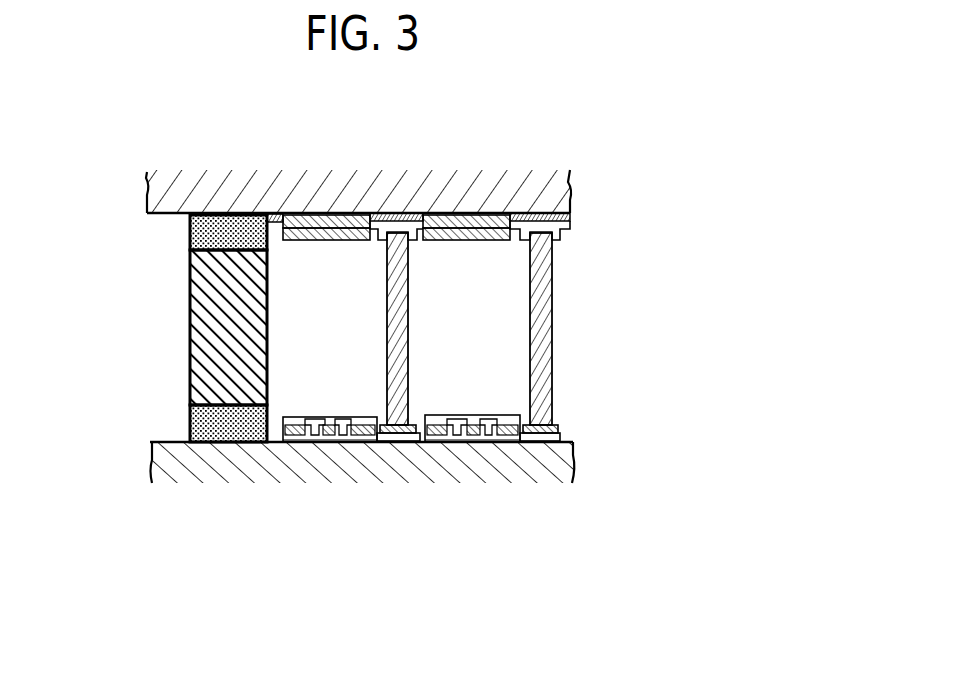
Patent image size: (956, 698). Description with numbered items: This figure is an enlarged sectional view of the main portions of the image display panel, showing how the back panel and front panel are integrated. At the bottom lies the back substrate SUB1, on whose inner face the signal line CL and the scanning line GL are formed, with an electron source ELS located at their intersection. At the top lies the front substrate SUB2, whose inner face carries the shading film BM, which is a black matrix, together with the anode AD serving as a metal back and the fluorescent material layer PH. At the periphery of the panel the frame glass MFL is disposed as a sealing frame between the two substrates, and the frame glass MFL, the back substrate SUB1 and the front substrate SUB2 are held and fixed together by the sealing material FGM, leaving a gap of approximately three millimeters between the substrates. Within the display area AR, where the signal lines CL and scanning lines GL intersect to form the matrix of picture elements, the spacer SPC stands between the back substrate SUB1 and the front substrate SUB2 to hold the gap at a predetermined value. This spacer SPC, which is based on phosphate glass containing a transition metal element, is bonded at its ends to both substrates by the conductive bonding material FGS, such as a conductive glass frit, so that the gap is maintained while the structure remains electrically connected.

The front substrate SUB2 is at (547, 190).
The back substrate SUB1 is at (573, 458).
The sealing material FGM is at (190, 228).
The frame glass MFL is at (190, 318).
The display area AR is at (298, 344).
The shading film BM is at (402, 220).
The fluorescent material layer PH is at (352, 222).
The anode AD is at (308, 247).
The conductive bonding material FGS is at (568, 233).
The spacer SPC is at (556, 333).
The electron source ELS is at (433, 443).
The signal line CL is at (472, 443).
The scanning line GL is at (515, 443).